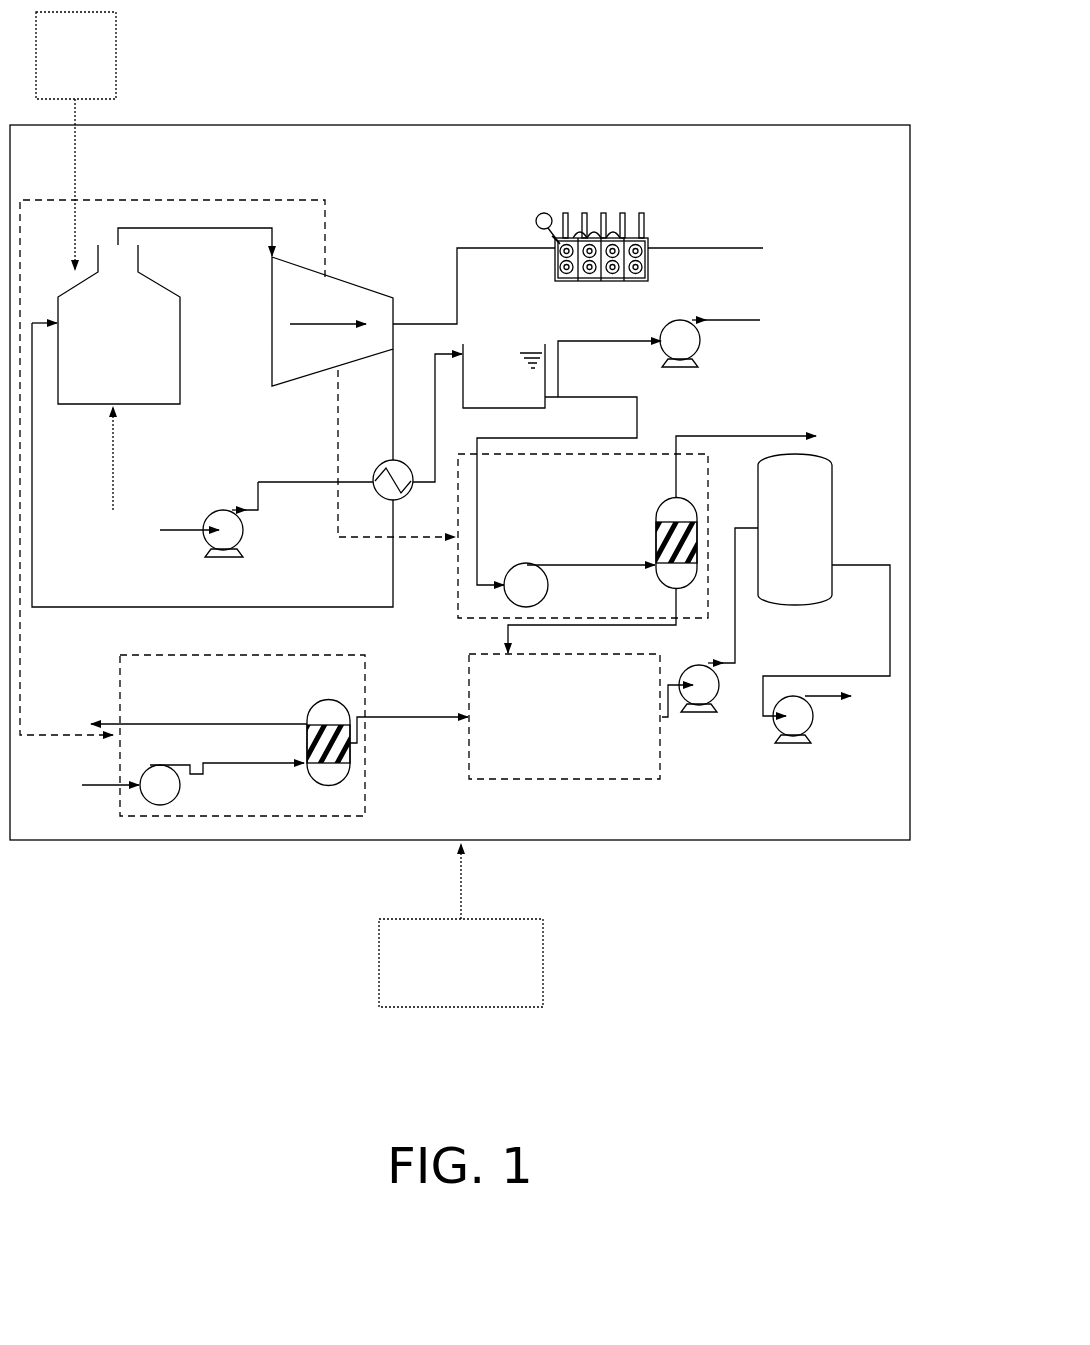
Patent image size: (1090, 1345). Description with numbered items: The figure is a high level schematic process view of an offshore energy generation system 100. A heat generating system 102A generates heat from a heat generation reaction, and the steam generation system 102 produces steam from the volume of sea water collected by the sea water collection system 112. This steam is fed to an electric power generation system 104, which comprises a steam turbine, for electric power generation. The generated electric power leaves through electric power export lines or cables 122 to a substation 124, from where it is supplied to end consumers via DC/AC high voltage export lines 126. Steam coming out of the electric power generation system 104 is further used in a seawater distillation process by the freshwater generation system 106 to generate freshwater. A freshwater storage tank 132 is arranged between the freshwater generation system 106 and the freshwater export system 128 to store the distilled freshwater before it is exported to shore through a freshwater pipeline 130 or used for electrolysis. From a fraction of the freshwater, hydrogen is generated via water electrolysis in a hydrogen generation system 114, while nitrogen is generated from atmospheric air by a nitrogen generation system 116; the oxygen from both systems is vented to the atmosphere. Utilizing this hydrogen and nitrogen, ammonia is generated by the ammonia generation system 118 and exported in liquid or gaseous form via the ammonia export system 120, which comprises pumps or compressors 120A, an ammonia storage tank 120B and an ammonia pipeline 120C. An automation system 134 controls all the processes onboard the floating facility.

The offshore energy generation system 100 is at (853, 62).
The steam generation system 102 is at (237, 467).
The heat generating system 102A is at (76, 141).
The electric power generation system 104 is at (332, 358).
The freshwater generation system 106 is at (360, 443).
The sea water collection system 112 is at (209, 534).
The hydrogen generation system 114 is at (637, 530).
The nitrogen generation system 116 is at (259, 735).
The ammonia generation system 118 is at (564, 716).
The ammonia export system 120 is at (788, 648).
The pumps or compressors 120A is at (776, 672).
The ammonia storage tank 120B is at (770, 558).
The ammonia pipeline 120C is at (859, 697).
The electric power export lines or cables 122 is at (474, 271).
The substation 124 is at (592, 262).
The DC/AC high voltage export lines 126 is at (737, 249).
The freshwater export system 128 is at (685, 361).
The freshwater pipeline 130 is at (759, 321).
The freshwater storage tank 132 is at (562, 463).
The automation system 134 is at (461, 925).